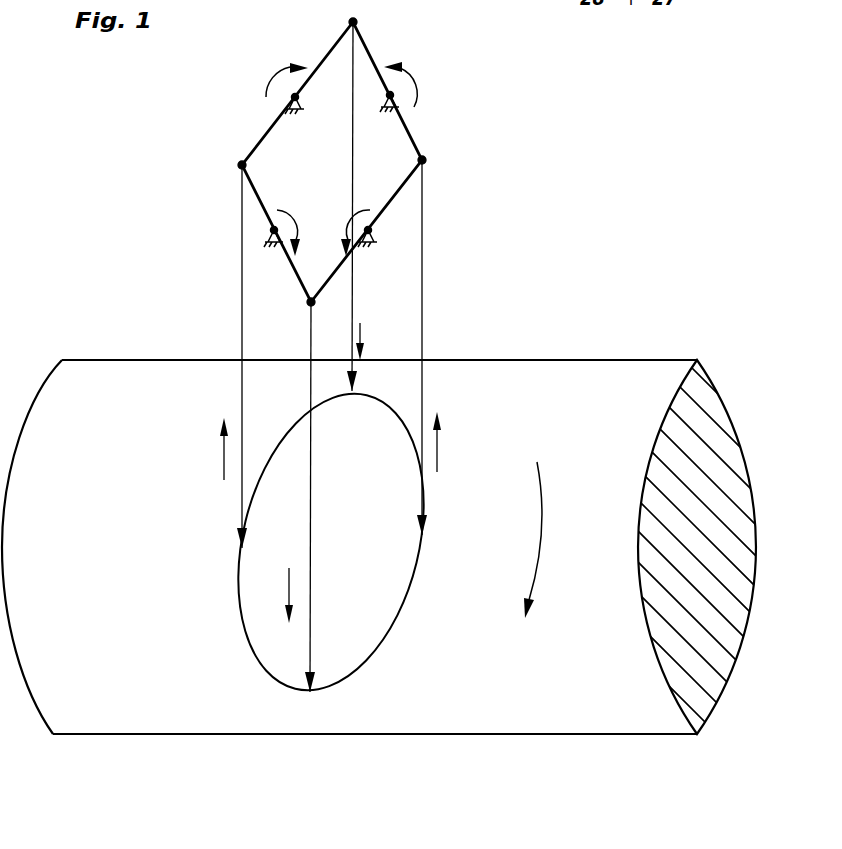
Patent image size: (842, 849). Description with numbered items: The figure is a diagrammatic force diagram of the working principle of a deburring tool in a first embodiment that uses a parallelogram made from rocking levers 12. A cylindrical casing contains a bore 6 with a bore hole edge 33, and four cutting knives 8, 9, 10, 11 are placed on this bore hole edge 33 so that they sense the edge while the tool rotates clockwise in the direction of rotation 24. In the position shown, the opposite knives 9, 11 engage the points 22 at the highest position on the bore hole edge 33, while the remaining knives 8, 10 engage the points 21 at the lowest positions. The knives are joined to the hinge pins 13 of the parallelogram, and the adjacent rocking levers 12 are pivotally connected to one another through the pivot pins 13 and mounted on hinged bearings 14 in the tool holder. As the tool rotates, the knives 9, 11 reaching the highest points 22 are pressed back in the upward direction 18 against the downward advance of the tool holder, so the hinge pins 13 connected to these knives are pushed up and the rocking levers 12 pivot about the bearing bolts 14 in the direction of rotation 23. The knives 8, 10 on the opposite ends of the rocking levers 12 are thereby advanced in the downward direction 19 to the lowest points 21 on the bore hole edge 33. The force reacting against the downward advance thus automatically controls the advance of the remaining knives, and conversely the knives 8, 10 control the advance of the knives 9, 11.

The bore 6 is at (358, 583).
The cutting knife 8 is at (310, 500).
The cutting knife 9 is at (423, 278).
The cutting knife 10 is at (353, 292).
The cutting knife 11 is at (241, 331).
The rocking lever 12 is at (264, 137).
The hinge pin 13 is at (357, 22).
The hinged bearing 14 is at (273, 93).
The direction upward 18 is at (223, 455).
The downward direction 19 is at (361, 333).
The lowest point 21 is at (353, 394).
The highest point 22 is at (240, 548).
The direction of rotation 23 is at (300, 68).
The direction of rotation 24 is at (543, 530).
The bore hole edge 33 is at (245, 624).